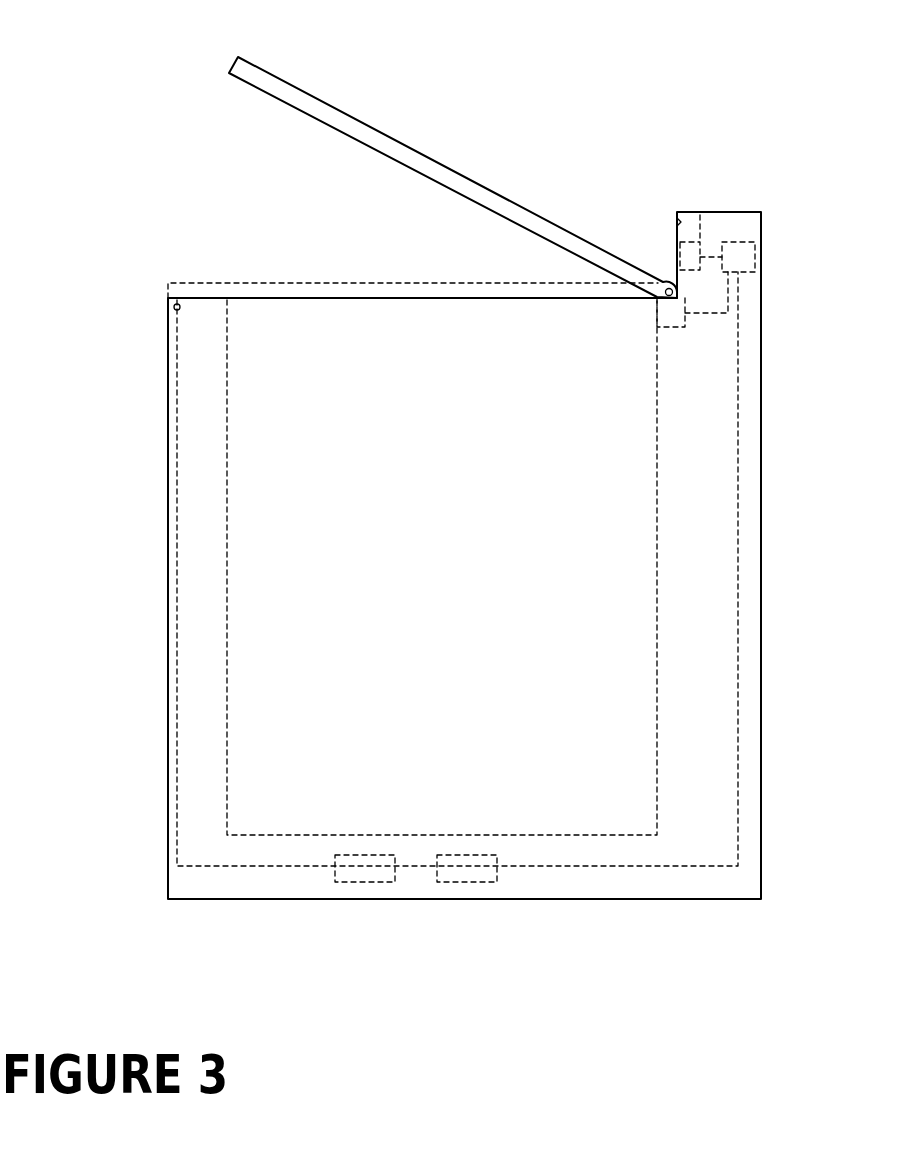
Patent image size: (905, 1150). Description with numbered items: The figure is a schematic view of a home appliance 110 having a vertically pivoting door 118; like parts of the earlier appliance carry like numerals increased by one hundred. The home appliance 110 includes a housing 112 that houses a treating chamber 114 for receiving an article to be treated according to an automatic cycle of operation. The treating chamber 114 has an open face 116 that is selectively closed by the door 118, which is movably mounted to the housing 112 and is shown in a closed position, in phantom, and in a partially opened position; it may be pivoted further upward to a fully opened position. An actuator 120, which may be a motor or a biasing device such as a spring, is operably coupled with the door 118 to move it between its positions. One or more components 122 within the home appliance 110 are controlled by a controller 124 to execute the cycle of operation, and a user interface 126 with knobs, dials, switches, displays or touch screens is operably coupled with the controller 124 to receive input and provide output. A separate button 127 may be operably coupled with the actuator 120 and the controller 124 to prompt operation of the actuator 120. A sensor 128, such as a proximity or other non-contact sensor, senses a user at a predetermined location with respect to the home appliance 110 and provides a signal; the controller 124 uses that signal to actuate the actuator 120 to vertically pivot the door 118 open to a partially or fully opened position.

The home appliance 110 is at (100, 177).
The housing 112 is at (167, 378).
The treating chamber 114 is at (486, 492).
The open face 116 is at (240, 298).
The door 118 is at (458, 178).
The actuator 120 is at (677, 327).
The components 122 is at (385, 883).
The controller 124 is at (742, 240).
The user interface 126 is at (698, 240).
The button 127 is at (677, 224).
The sensor 128 is at (172, 307).